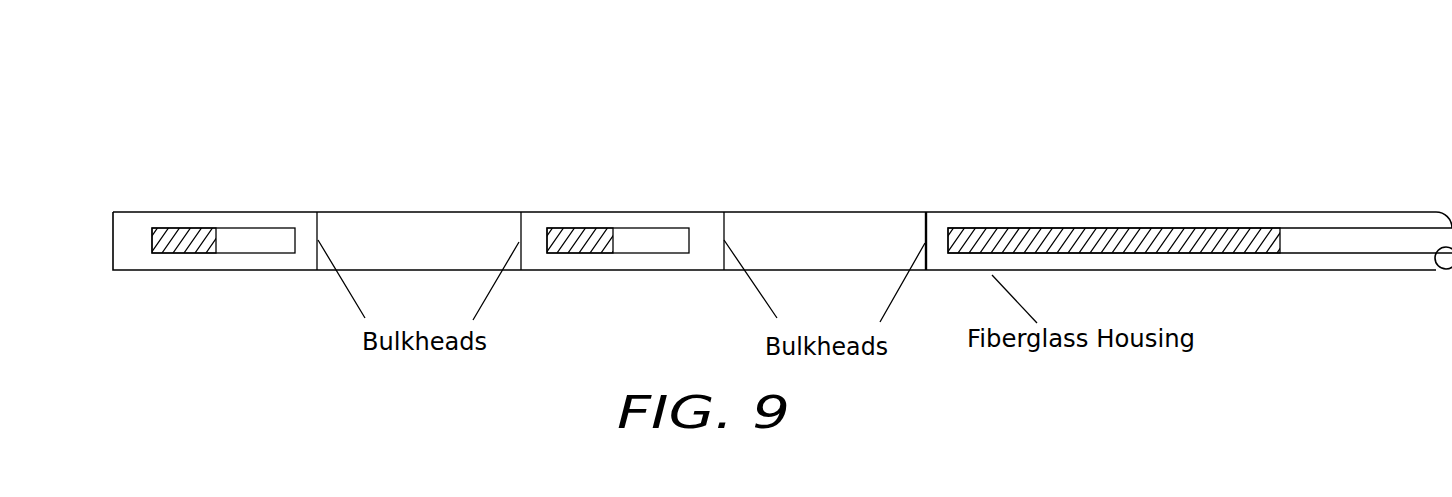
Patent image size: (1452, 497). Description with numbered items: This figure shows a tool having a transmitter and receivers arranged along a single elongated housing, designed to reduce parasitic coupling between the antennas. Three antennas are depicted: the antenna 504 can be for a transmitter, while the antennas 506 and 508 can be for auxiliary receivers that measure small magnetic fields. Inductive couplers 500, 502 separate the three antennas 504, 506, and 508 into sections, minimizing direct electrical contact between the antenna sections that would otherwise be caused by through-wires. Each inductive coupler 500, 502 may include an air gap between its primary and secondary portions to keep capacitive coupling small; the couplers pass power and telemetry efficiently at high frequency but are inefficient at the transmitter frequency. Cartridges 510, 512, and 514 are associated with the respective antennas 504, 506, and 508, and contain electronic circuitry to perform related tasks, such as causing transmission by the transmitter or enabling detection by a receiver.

The inductive coupler 500 is at (409, 243).
The inductive coupler 502 is at (815, 240).
The antenna 504 is at (1067, 243).
The antenna 506 is at (577, 237).
The antenna 508 is at (180, 237).
The cartridge 510 is at (1353, 238).
The cartridge 512 is at (659, 235).
The cartridge 514 is at (267, 242).